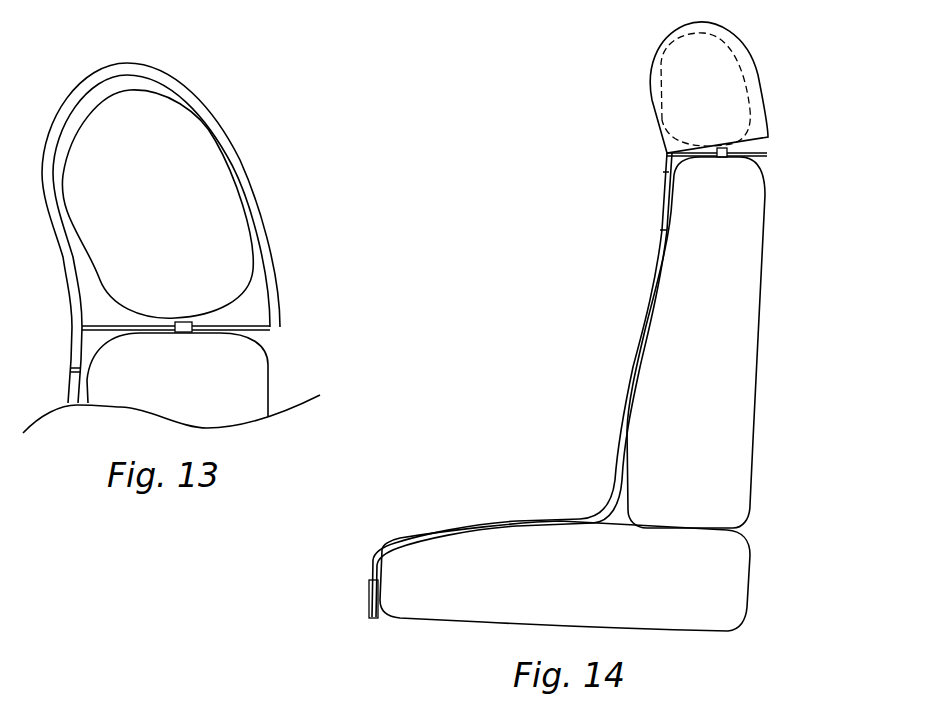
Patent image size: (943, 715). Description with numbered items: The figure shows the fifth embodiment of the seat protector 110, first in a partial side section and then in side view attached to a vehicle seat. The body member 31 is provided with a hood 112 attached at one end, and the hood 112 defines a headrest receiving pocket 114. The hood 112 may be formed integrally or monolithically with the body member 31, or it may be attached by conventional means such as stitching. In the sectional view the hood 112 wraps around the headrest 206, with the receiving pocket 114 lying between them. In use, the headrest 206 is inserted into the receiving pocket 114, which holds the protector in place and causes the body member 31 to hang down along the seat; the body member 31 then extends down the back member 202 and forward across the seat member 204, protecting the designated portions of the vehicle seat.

In FIG. 14, the seat protector 110 is at (598, 228).
In FIG. 13, the hood 112 is at (245, 163).
In FIG. 14, the hood 112 is at (738, 50).
In FIG. 13, the headrest receiving pocket 114 is at (255, 322).
In FIG. 14, the body member 31 is at (625, 392).
In FIG. 13, the back member 202 is at (102, 397).
In FIG. 14, the back member 202 is at (720, 390).
In FIG. 14, the seat member 204 is at (715, 608).
In FIG. 13, the headrest 206 is at (172, 217).
In FIG. 14, the headrest 206 is at (680, 98).